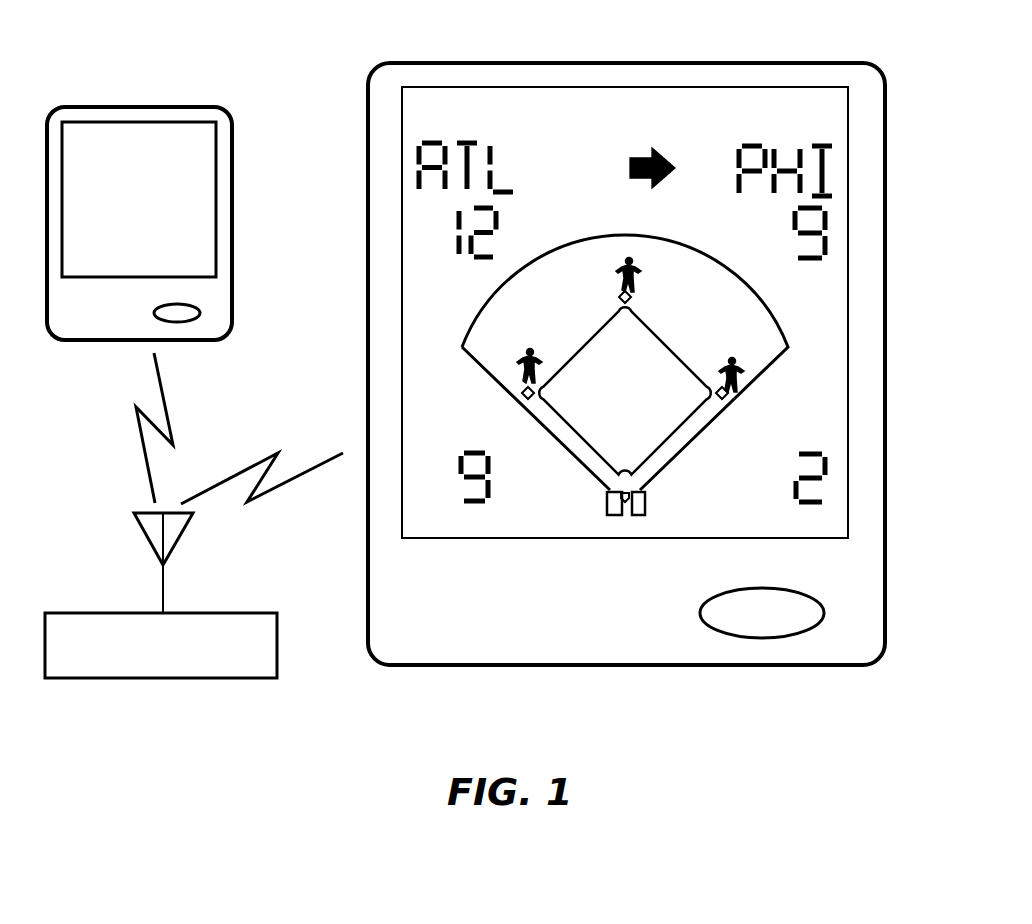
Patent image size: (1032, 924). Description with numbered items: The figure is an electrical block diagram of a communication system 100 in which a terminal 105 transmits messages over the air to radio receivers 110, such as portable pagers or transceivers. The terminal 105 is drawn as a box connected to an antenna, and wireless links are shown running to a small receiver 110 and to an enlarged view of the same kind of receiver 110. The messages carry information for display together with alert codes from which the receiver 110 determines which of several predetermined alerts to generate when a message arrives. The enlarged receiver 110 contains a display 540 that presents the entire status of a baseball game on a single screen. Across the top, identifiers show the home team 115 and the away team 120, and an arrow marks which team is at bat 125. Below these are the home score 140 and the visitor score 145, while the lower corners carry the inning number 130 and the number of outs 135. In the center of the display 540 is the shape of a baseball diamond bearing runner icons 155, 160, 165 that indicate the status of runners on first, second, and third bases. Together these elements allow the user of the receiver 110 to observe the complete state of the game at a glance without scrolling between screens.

The communication system 100 is at (276, 558).
The terminal 105 is at (245, 613).
The radio receiver 110 is at (154, 107).
The display 540 is at (488, 95).
The home team identifier 115 is at (825, 127).
The away team identifier 120 is at (412, 142).
The at-bat indicator 125 is at (673, 143).
The inning number 130 is at (425, 447).
The number of outs 135 is at (838, 455).
The home score 140 is at (837, 235).
The visitor score 145 is at (443, 233).
The first base runner icon 155 is at (747, 372).
The second base runner icon 160 is at (640, 297).
The third base runner icon 165 is at (507, 362).